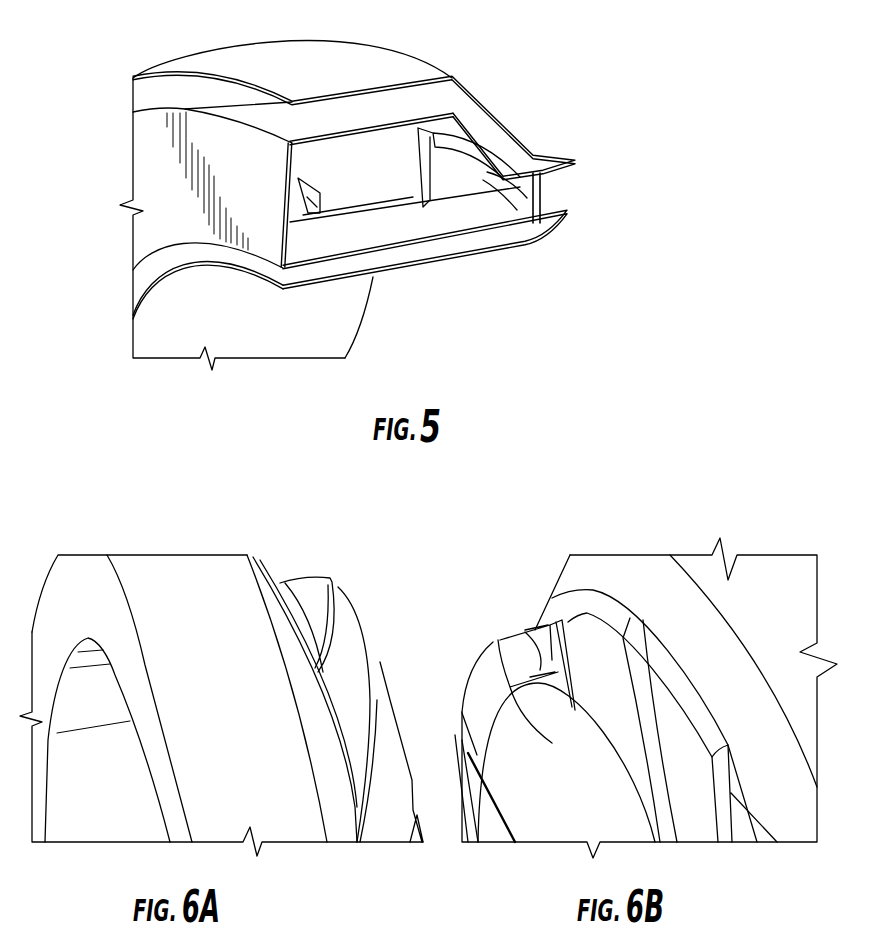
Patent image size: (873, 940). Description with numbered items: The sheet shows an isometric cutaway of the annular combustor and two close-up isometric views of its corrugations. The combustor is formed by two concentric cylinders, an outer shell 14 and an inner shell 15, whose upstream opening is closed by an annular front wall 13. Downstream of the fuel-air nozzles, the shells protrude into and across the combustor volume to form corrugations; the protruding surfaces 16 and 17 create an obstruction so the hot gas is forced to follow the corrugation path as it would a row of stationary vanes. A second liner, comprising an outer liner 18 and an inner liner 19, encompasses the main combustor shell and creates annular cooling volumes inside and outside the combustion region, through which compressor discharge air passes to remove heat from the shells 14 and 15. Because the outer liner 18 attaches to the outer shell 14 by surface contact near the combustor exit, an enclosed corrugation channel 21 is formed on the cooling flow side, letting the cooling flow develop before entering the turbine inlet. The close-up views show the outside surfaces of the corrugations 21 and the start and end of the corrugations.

In FIG. 5, the front wall 13 is at (172, 163).
In FIG. 5, the outer shell 14 is at (388, 103).
In FIG. 5, the inner shell 15 is at (424, 222).
In FIG. 5, the protruding surface 16 is at (523, 207).
In FIG. 5, the protruding surface 17 is at (538, 168).
In FIG. 5, the outer liner 18 is at (302, 66).
In FIG. 5, the second liner 19 is at (323, 268).
In FIG. 6A, the corrugation channel 21 is at (383, 660).
In FIG. 6B, the corrugation channel 21 is at (493, 640).